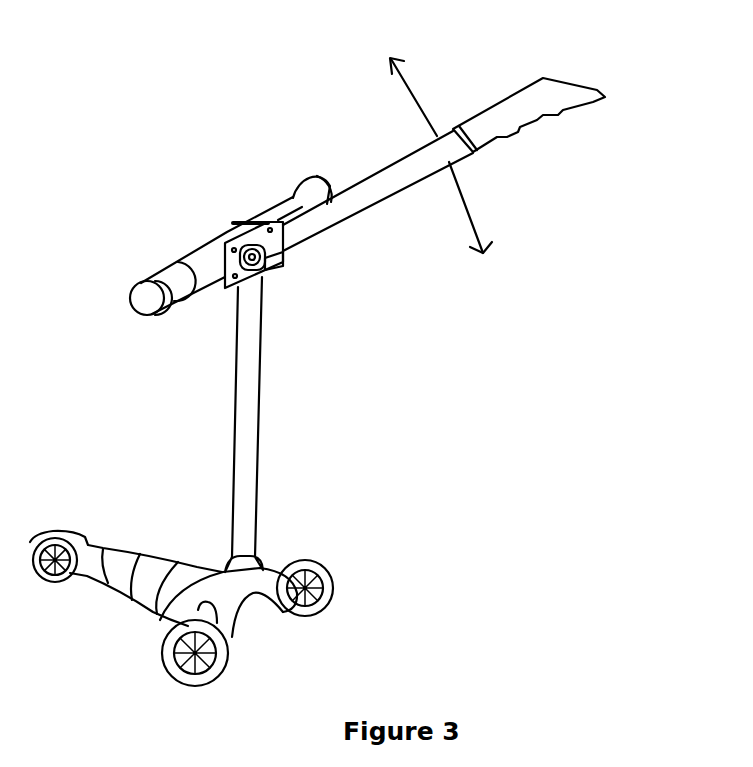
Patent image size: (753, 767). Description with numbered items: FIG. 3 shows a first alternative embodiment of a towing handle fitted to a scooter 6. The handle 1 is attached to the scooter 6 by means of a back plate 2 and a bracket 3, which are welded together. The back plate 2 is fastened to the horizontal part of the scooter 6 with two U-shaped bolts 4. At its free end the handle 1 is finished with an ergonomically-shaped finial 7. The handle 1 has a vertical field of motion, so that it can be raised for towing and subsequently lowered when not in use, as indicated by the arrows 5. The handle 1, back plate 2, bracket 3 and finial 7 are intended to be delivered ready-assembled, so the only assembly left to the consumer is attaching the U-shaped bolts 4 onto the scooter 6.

The handle 1 is at (385, 169).
The back plate 2 is at (225, 288).
The bracket 3 is at (263, 268).
The U-shaped bolts 4 is at (227, 244).
The arrows 5 is at (425, 108).
The scooter 6 is at (236, 423).
The finial 7 is at (605, 98).